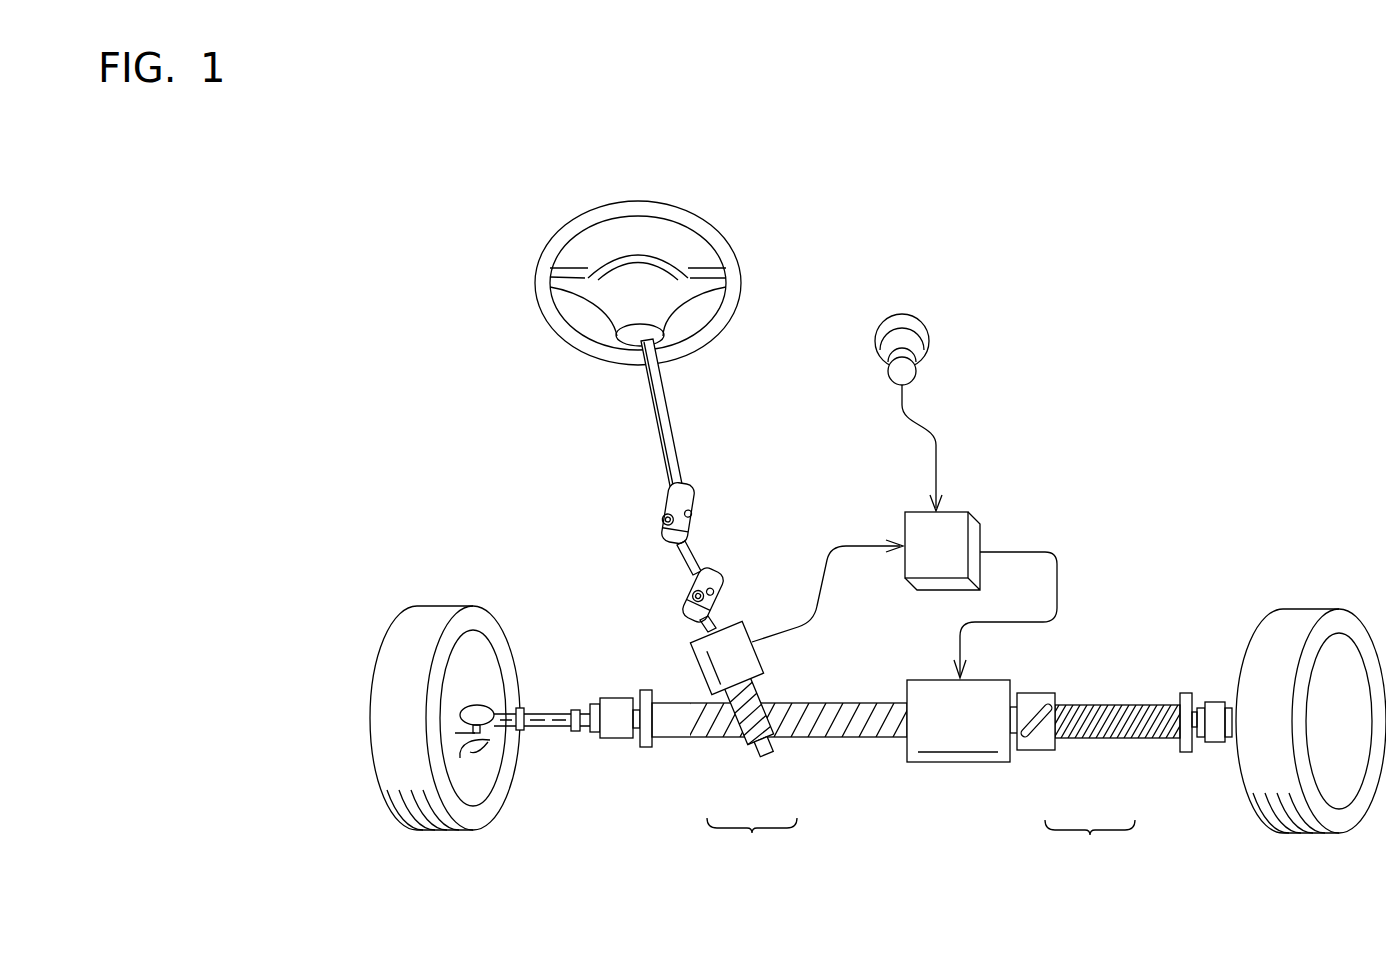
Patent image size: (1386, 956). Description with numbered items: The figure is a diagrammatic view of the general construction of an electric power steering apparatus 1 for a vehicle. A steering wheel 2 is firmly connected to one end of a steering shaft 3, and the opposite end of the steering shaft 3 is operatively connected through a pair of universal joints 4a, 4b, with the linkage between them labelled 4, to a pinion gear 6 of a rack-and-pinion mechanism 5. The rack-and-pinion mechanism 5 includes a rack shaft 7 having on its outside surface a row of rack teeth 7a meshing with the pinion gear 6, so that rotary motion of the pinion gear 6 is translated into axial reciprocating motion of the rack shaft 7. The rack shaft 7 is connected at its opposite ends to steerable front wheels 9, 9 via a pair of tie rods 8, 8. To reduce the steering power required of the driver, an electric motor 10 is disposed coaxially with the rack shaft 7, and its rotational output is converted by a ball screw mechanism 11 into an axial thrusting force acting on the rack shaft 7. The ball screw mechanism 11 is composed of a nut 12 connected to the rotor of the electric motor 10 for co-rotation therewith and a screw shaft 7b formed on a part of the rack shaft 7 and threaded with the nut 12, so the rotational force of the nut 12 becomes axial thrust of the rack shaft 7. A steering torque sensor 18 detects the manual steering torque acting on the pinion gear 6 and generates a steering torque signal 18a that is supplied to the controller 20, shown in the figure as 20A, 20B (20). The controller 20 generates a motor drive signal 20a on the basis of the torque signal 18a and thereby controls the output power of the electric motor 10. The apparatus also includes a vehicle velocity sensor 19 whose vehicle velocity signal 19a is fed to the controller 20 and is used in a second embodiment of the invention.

The electric power steering apparatus 1 is at (1097, 338).
The steering wheel 2 is at (540, 257).
The steering shaft 3 is at (662, 392).
The intermediate shaft 4 is at (695, 558).
The universal joint 4a is at (692, 503).
The universal joint 4b is at (713, 586).
The rack-and-pinion mechanism 5 is at (752, 848).
The pinion gear 6 is at (743, 745).
The rack shaft 7 is at (922, 762).
The rack teeth 7a is at (807, 720).
The screw shaft 7b is at (1128, 738).
The tie rod 8 is at (575, 735).
The front wheel 9 is at (440, 604).
The electric motor 10 is at (960, 762).
The ball screw mechanism 11 is at (1090, 850).
The nut 12 is at (1042, 750).
The steering torque sensor 18 is at (695, 660).
The steering torque signal 18a is at (807, 620).
The vehicle velocity sensor 19 is at (908, 316).
The speed sensor signal line 19a is at (935, 442).
The controller 20 is at (1053, 543).
The controller 20A is at (1053, 543).
The controller 20B is at (982, 538).
The motor drive signal 20a is at (1058, 589).